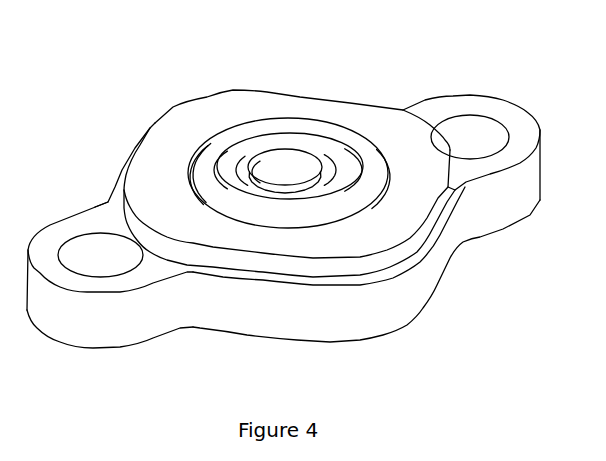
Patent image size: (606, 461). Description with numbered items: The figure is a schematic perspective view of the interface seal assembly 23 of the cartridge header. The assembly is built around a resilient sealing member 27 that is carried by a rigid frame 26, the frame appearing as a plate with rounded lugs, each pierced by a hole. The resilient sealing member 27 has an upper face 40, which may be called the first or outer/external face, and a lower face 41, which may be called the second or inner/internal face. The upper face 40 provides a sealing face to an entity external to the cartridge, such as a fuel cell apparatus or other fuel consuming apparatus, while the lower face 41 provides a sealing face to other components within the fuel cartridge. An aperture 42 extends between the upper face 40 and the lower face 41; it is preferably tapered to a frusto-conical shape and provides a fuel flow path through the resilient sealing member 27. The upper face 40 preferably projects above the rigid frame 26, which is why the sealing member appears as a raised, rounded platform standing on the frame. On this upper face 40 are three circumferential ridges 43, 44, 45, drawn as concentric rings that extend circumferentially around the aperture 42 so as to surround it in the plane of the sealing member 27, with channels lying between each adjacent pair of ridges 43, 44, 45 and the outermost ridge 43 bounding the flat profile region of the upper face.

The interface seal assembly 23 is at (105, 111).
The rigid frame 26 is at (218, 317).
The resilient sealing member 27 is at (371, 115).
The upper face 40 is at (192, 120).
The lower face 41 is at (357, 353).
The aperture 42 is at (282, 160).
The circumferential ridge 43 is at (305, 208).
The circumferential ridge 44 is at (300, 193).
The circumferential ridge 45 is at (306, 177).